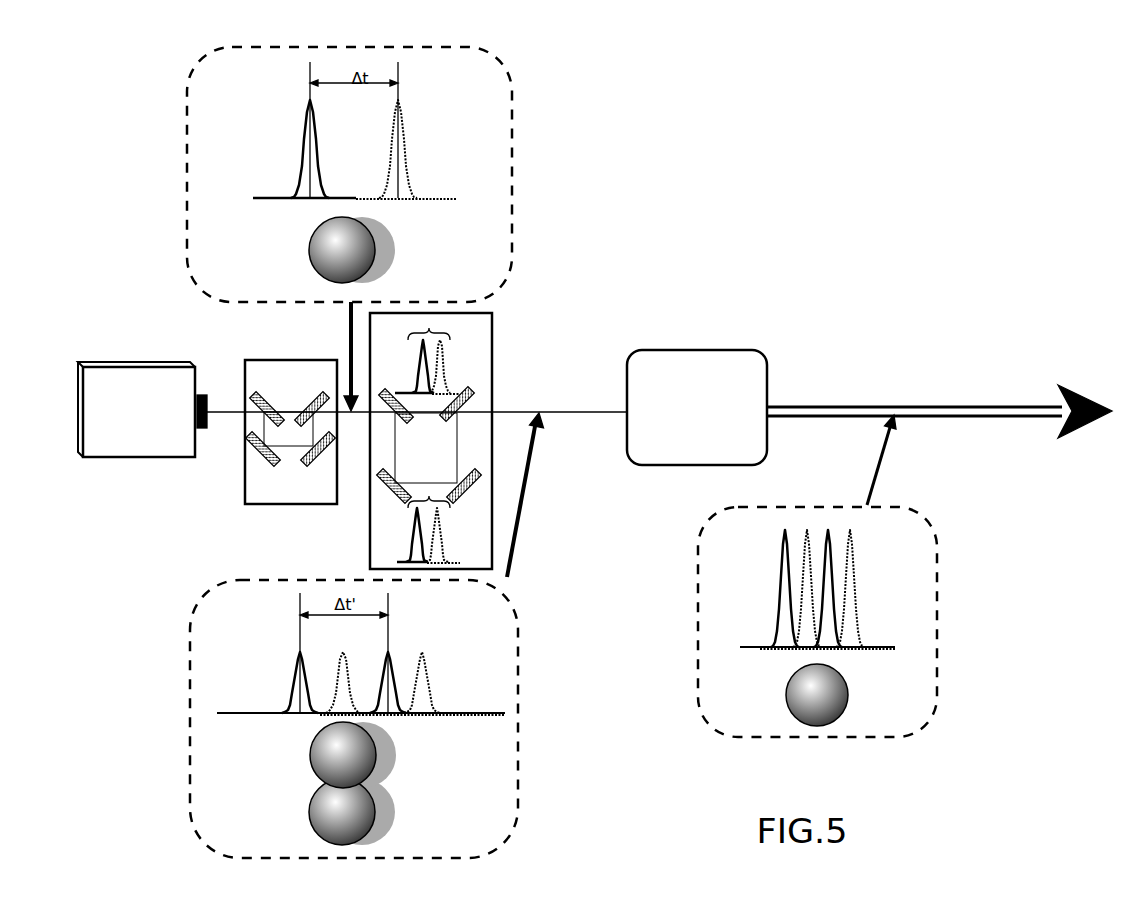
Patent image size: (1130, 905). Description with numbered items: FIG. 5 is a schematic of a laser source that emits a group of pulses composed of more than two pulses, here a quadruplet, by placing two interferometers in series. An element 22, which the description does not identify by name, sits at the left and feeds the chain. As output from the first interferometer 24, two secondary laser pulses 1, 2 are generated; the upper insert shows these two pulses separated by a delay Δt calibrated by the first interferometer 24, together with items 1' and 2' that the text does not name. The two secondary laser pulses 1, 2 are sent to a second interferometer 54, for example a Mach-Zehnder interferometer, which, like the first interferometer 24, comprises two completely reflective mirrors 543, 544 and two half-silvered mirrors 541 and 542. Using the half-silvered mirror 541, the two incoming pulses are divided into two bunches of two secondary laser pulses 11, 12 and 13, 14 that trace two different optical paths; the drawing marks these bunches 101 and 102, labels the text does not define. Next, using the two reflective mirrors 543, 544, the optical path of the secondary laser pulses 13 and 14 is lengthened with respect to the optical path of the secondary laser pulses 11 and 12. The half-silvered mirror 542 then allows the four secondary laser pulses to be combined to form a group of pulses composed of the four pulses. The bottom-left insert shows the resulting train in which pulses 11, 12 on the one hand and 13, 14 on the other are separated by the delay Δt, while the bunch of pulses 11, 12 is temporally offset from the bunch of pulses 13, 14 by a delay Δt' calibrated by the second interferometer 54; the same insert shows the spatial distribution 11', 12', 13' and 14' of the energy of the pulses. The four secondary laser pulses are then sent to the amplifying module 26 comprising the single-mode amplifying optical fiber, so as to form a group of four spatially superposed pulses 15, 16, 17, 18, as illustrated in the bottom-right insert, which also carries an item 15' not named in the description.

The secondary laser pulse 1 is at (285, 149).
The secondary laser pulse 2 is at (425, 149).
The first laser spot 1' is at (306, 250).
The second laser spot 2' is at (400, 250).
The secondary laser pulse 11 is at (354, 526).
The secondary laser pulse 12 is at (402, 526).
The secondary laser pulse 13 is at (394, 610).
The secondary laser pulse 14 is at (444, 610).
The spatial energy distribution of pulse 11 11' is at (317, 755).
The spatial energy distribution of pulse 12 12' is at (391, 755).
The spatial energy distribution of pulse 13 13' is at (312, 812).
The spatial energy distribution of pulse 14 14' is at (393, 812).
The spatially superposed pulse 15 is at (763, 588).
The spatially superposed pulse 16 is at (806, 578).
The spatially superposed pulse 17 is at (829, 578).
The spatially superposed pulse 18 is at (854, 538).
The combined output spot 15' is at (789, 695).
The laser source 22 is at (126, 422).
The first interferometer 24 is at (245, 487).
The amplifying module 26 is at (723, 350).
The second interferometer 54 is at (492, 338).
The half-silvered mirror 541 is at (390, 395).
The half-silvered mirror 542 is at (470, 396).
The completely reflective mirror 543 is at (386, 489).
The completely reflective mirror 544 is at (478, 486).
The first pulse pair 101 is at (410, 334).
The second pulse pair 102 is at (429, 496).